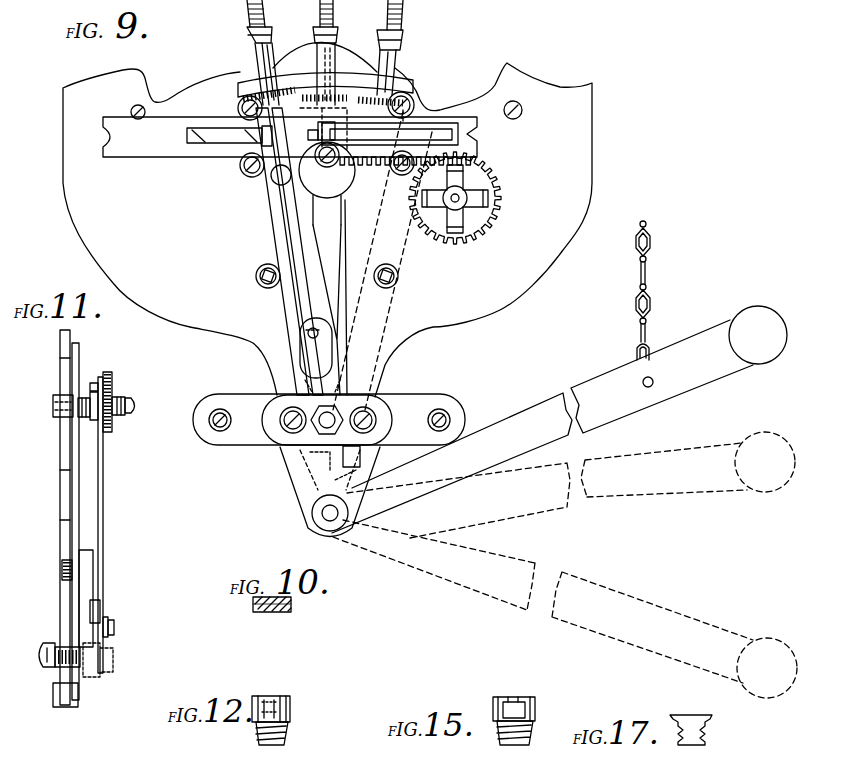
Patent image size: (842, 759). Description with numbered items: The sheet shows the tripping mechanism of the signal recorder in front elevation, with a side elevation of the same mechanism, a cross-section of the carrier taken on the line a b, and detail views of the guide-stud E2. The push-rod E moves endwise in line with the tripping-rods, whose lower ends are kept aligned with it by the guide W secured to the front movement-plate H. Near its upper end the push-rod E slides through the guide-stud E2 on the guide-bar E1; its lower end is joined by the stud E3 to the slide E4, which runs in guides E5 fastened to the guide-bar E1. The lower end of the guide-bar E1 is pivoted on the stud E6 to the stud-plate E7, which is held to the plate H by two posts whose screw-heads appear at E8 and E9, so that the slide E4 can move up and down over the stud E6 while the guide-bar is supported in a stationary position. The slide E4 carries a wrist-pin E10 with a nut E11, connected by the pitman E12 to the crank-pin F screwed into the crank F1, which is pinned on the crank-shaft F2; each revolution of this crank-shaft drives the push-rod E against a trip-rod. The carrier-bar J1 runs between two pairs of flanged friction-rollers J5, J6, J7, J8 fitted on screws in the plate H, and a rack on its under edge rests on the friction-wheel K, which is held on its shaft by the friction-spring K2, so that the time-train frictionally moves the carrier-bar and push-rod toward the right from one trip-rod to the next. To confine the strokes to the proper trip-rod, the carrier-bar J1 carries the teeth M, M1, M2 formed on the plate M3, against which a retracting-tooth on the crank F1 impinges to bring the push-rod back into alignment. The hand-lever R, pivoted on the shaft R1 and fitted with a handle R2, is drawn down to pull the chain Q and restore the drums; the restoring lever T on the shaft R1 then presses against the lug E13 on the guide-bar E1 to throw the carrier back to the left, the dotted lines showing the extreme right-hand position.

In FIG. 9, the front movement-plate H is at (327, 219).
In FIG. 9, the guide W is at (325, 86).
In FIG. 9, the carrier-bar J1 is at (290, 136).
In FIG. 9, the flanged friction-roller J5 is at (238, 104).
In FIG. 9, the flanged friction-roller J6 is at (240, 166).
In FIG. 9, the flanged friction-roller J7 is at (415, 105).
In FIG. 9, the flanged friction-roller J8 is at (390, 165).
In FIG. 9, the carrier-tooth M is at (203, 143).
In FIG. 9, the carrier-tooth M1 is at (247, 141).
In FIG. 9, the carrier-tooth M2 is at (306, 132).
In FIG. 9, the plate M3 is at (224, 136).
In FIG. 9, the friction-wheel K is at (489, 177).
In FIG. 9, the friction-spring K2 is at (476, 200).
In FIG. 9, the crank-pin F is at (342, 200).
In FIG. 11, the crank-pin F is at (90, 386).
In FIG. 9, the crank F1 is at (336, 224).
In FIG. 11, the crank F1 is at (112, 380).
In FIG. 11, the crank-shaft F2 is at (133, 401).
In FIG. 9, the push-rod E is at (285, 217).
In FIG. 11, the push-rod E is at (60, 452).
In FIG. 9, the guide-bar E1 is at (274, 198).
In FIG. 11, the guide-bar E1 is at (79, 362).
In FIG. 10, the guide-bar E1 is at (262, 613).
In FIG. 9, the guide-stud E2 is at (270, 178).
In FIG. 11, the guide-stud E2 is at (53, 405).
In FIG. 12, the guide-stud E2 is at (293, 701).
In FIG. 15, the guide-stud E2 is at (538, 702).
In FIG. 9, the stud E3 is at (307, 334).
In FIG. 11, the stud E3 is at (62, 570).
In FIG. 11, the slide E4 is at (82, 553).
In FIG. 10, the slide E4 is at (280, 613).
In FIG. 11, the guides E5 is at (84, 603).
In FIG. 10, the guides E5 is at (256, 605).
In FIG. 9, the stud E6 is at (293, 443).
In FIG. 11, the stud E6 is at (41, 650).
In FIG. 9, the stud-plate E7 is at (386, 406).
In FIG. 11, the stud-plate E7 is at (57, 666).
In FIG. 9, the screw head E8 is at (280, 405).
In FIG. 9, the screw head E9 is at (368, 421).
In FIG. 9, the wrist-pin E10 is at (346, 398).
In FIG. 11, the wrist-pin E10 is at (115, 628).
In FIG. 11, the nut E11 is at (108, 621).
In FIG. 9, the pitman E12 is at (329, 255).
In FIG. 11, the pitman E12 is at (103, 558).
In FIG. 9, the lug E13 is at (362, 468).
In FIG. 11, the lug E13 is at (60, 707).
In FIG. 9, the section line a is at (304, 388).
In FIG. 9, the section line b is at (326, 390).
In FIG. 9, the carrier-bar-restoring lever T is at (314, 533).
In FIG. 9, the hand-lever R is at (564, 509).
In FIG. 9, the hand-lever shaft R1 is at (312, 513).
In FIG. 9, the handle R2 is at (758, 335).
In FIG. 9, the chain Q is at (651, 243).